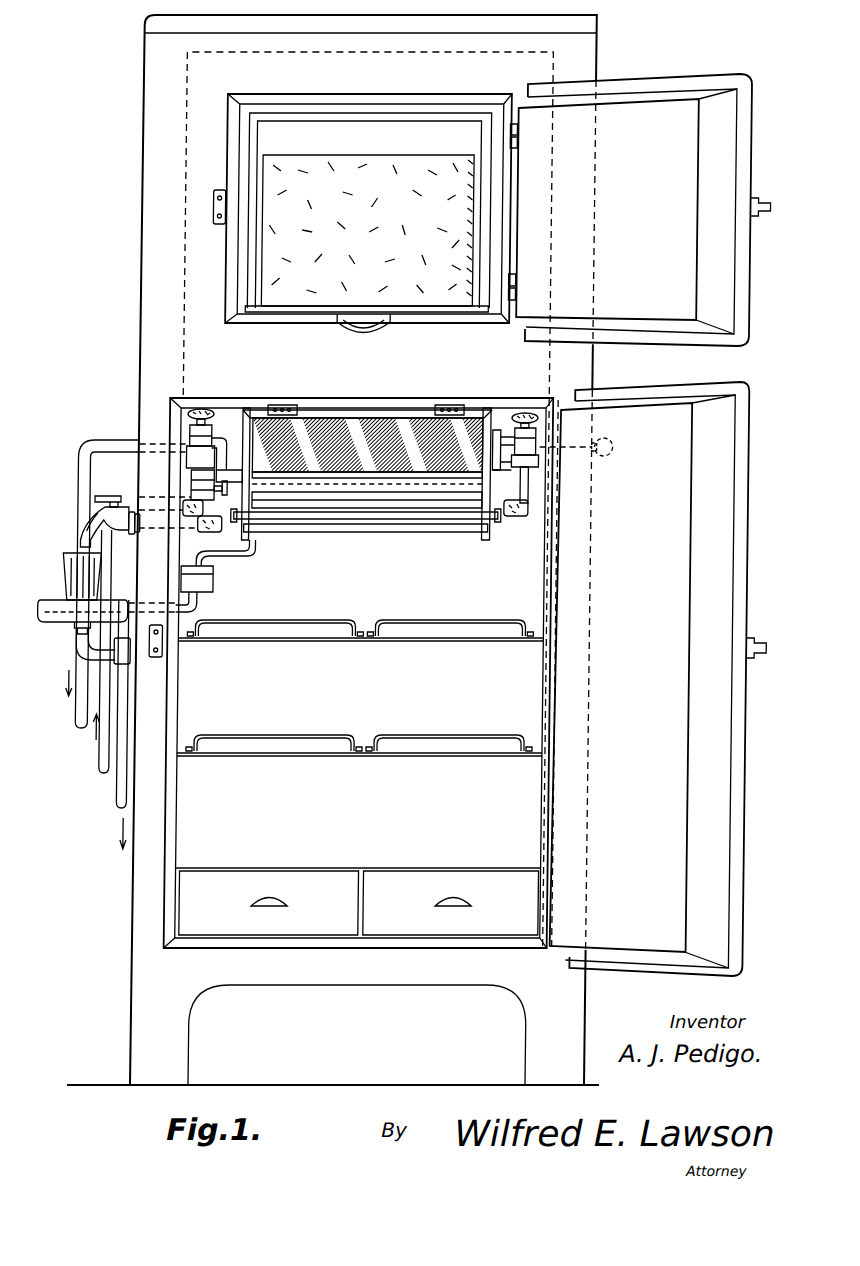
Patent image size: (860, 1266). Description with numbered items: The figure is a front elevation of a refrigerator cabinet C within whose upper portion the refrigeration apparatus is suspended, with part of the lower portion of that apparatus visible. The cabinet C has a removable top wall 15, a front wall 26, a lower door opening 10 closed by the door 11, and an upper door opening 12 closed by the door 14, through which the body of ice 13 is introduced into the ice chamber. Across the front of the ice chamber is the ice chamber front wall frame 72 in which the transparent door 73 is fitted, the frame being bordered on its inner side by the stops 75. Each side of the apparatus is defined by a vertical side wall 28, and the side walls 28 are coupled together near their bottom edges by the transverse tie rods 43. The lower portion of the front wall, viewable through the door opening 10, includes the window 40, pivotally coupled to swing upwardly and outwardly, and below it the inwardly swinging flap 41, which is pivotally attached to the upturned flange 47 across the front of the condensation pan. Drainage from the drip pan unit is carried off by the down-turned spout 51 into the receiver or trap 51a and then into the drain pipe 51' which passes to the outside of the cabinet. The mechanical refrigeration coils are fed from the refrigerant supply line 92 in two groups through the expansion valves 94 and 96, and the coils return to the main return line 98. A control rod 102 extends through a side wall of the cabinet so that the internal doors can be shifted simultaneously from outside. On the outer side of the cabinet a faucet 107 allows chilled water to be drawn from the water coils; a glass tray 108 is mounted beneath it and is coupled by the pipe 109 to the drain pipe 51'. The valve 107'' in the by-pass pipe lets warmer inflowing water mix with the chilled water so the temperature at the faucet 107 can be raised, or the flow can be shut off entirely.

The top wall 15 is at (150, 22).
The cabinet C is at (145, 112).
The front wall 26 is at (227, 355).
The upper door opening 12 is at (232, 250).
The ice chamber front wall frame 72 is at (330, 104).
The stops 75 is at (432, 120).
The body of ice 13 is at (265, 170).
The door 73 is at (452, 312).
The door 14 is at (681, 105).
The door 11 is at (740, 468).
The door opening 10 is at (186, 787).
The side wall 28 is at (493, 488).
The window 40 is at (380, 462).
The flap 41 is at (423, 497).
The flange 47 is at (458, 522).
The tie rods 43 is at (309, 533).
The expansion valve 96 is at (245, 417).
The valve 107'' is at (161, 497).
The down-turned spout 51 is at (251, 574).
The receiver or trap 51a is at (212, 578).
The expansion valve 94 is at (524, 412).
The control rod 102 is at (587, 445).
The main return line 98 is at (86, 702).
The refrigerant supply line 92 is at (116, 742).
The drain pipe 51' is at (99, 724).
The pipe 109 is at (98, 652).
The glass tray 108 is at (57, 615).
The faucet 107 is at (83, 546).